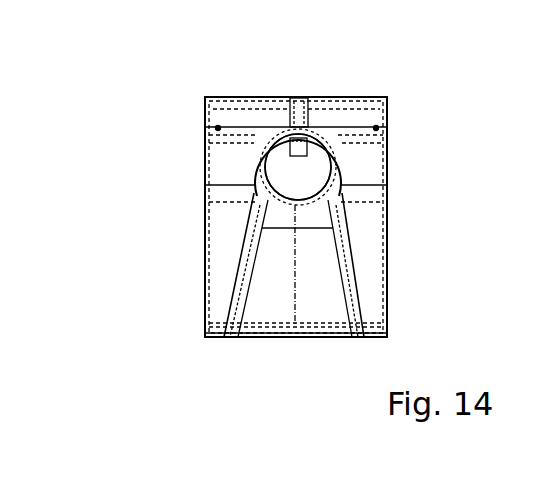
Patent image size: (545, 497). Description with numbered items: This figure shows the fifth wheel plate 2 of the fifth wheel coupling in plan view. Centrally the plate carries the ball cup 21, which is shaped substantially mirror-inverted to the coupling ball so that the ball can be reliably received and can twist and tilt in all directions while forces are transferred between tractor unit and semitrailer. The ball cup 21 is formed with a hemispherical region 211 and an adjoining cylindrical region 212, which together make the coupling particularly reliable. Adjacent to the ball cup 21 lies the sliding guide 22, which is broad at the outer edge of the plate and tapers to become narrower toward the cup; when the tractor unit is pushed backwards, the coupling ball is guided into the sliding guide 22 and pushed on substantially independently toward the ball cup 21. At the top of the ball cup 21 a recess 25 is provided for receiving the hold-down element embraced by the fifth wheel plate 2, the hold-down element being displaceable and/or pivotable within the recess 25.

The fifth wheel plate 2 is at (135, 100).
The ball cup 21 is at (288, 180).
The hemispherical region 211 is at (316, 176).
The cylindrical region 212 is at (346, 160).
The sliding guide 22 is at (318, 263).
The recess 25 is at (307, 142).